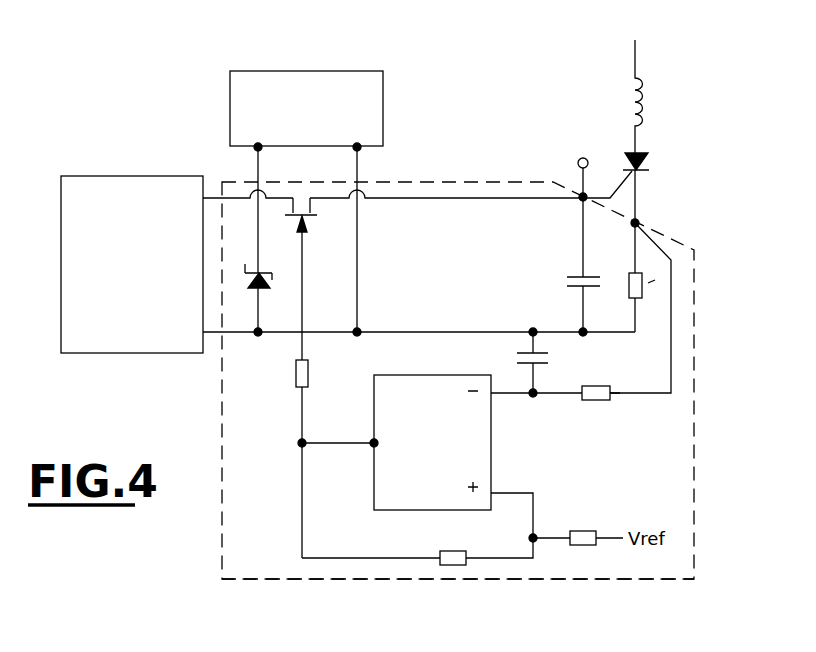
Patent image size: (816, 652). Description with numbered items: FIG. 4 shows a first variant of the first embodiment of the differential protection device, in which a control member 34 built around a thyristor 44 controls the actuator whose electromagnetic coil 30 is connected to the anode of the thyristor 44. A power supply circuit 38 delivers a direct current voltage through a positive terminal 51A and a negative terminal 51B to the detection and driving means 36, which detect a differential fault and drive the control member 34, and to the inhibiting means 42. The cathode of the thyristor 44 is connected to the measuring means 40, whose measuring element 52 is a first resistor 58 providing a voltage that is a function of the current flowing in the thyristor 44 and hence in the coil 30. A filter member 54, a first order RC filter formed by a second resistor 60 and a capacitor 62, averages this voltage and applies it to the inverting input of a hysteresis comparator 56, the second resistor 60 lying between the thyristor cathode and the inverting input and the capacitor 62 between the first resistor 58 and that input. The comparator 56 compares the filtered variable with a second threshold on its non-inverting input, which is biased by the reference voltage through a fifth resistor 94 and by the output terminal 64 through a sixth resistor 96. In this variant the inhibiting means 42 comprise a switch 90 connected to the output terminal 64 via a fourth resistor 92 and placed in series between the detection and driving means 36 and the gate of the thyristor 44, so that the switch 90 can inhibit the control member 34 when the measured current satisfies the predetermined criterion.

The electromagnetic coil 30 is at (650, 125).
The control member 34 is at (583, 114).
The detection and driving means 36 is at (108, 345).
The power supply circuit 38 is at (377, 107).
The measuring means 40 is at (680, 342).
The inhibiting means 42 is at (283, 556).
The thyristor 44 is at (650, 163).
The positive terminal 51A is at (255, 148).
The negative terminal 51B is at (360, 148).
The measuring element 52 is at (665, 270).
The filter member 54 is at (645, 408).
The hysteresis comparator 56 is at (510, 476).
The first resistor 58 is at (643, 296).
The second resistor 60 is at (586, 401).
The capacitor 62 is at (548, 355).
The output terminal 64 is at (372, 447).
The switch 90 is at (312, 206).
The fourth resistor 92 is at (296, 373).
The fifth resistor 94 is at (583, 547).
The sixth resistor 96 is at (452, 567).